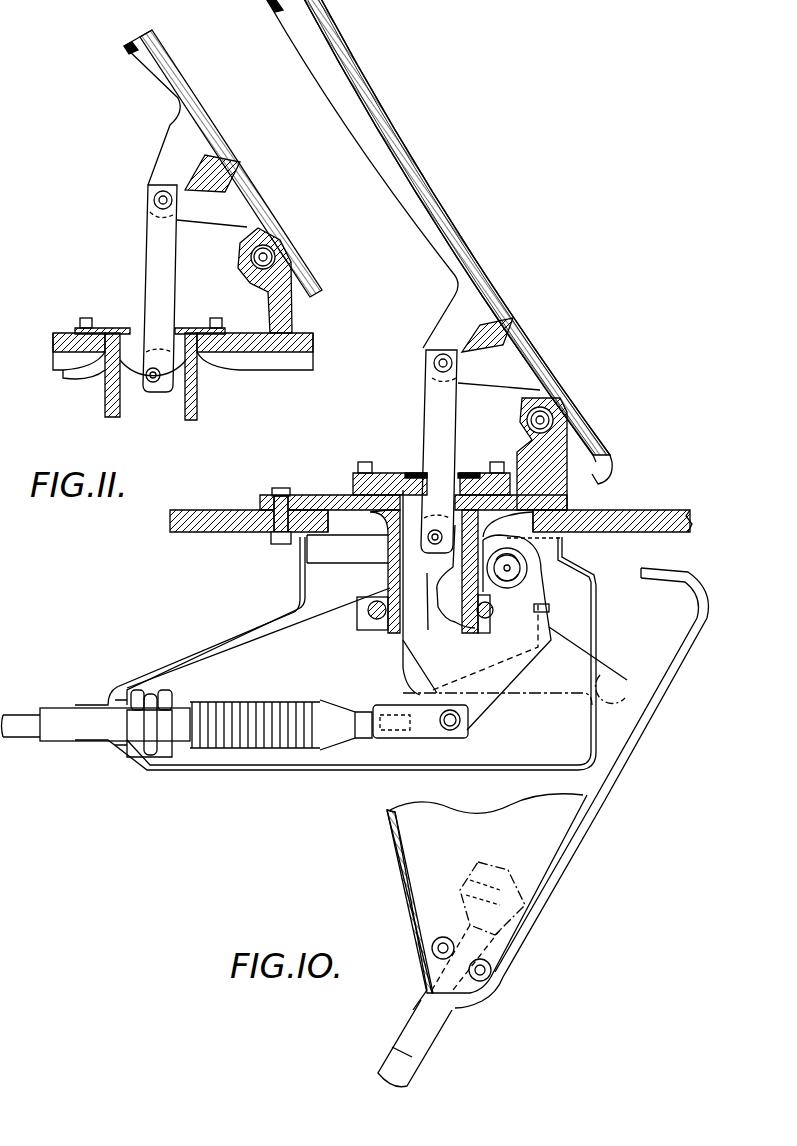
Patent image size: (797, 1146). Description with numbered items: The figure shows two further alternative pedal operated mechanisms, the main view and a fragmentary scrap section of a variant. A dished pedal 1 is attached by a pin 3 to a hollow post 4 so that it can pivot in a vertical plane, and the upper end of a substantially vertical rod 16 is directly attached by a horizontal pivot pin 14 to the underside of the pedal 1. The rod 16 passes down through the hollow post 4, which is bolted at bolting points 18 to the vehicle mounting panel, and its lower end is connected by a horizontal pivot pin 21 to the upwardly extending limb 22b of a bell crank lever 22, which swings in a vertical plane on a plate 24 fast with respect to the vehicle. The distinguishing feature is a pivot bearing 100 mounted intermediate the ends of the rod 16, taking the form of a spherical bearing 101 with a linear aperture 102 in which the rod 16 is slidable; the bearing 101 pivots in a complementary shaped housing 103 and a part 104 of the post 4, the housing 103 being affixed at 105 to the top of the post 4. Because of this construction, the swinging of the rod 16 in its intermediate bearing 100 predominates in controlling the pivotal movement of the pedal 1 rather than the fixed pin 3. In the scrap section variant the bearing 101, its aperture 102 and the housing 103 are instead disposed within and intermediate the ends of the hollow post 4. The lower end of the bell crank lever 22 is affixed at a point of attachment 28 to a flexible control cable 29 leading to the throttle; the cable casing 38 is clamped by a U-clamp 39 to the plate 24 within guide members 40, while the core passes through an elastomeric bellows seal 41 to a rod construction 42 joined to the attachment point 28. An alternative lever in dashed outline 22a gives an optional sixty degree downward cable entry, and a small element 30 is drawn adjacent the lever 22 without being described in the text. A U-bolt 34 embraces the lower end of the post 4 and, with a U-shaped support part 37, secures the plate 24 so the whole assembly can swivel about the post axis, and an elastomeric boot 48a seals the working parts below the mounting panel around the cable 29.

In FIG. 11, the pedal 1 is at (268, 222).
In FIG. 10, the pedal 1 is at (470, 275).
In FIG. 10, the pin 3 is at (526, 458).
In FIG. 11, the hollow post 4 is at (105, 395).
In FIG. 10, the hollow post 4 is at (385, 545).
In FIG. 11, the pivot pin 14 is at (153, 200).
In FIG. 10, the pivot pin 14 is at (438, 352).
In FIG. 11, the rod 16 is at (148, 252).
In FIG. 10, the rod 16 is at (428, 380).
In FIG. 10, the bolting points 18 is at (275, 488).
In FIG. 11, the pivot pin 21 is at (153, 392).
In FIG. 10, the pivot pin 21 is at (435, 528).
In FIG. 10, the bell crank lever 22 is at (480, 680).
In FIG. 10, the dashed outline of bell crank lever 22a is at (662, 658).
In FIG. 10, the limb 22b is at (462, 656).
In FIG. 10, the plate 24 is at (200, 655).
In FIG. 10, the point of attachment 28 is at (455, 732).
In FIG. 10, the flexible control cable 29 is at (24, 745).
In FIG. 10, the stop clip 30 is at (548, 606).
In FIG. 10, the U-bolt 34 is at (368, 612).
In FIG. 10, the support part 37 is at (377, 630).
In FIG. 10, the casing 38 is at (60, 742).
In FIG. 10, the U-clamp 39 is at (149, 694).
In FIG. 10, the guide members 40 is at (150, 757).
In FIG. 10, the elastomeric bellows seal 41 is at (278, 702).
In FIG. 10, the rod construction 42 is at (385, 740).
In FIG. 10, the elastomeric boot 48a is at (612, 793).
In FIG. 11, the pivot bearing 100 is at (185, 322).
In FIG. 10, the pivot bearing 100 is at (467, 440).
In FIG. 11, the spherical bearing 101 is at (183, 328).
In FIG. 10, the spherical bearing 101 is at (418, 470).
In FIG. 11, the linear aperture 102 is at (195, 380).
In FIG. 10, the linear aperture 102 is at (353, 476).
In FIG. 11, the housing 103 is at (125, 328).
In FIG. 10, the housing 103 is at (462, 470).
In FIG. 11, the part of the post 104 is at (100, 365).
In FIG. 10, the part of the post 104 is at (555, 492).
In FIG. 10, the affixing point 105 is at (364, 462).